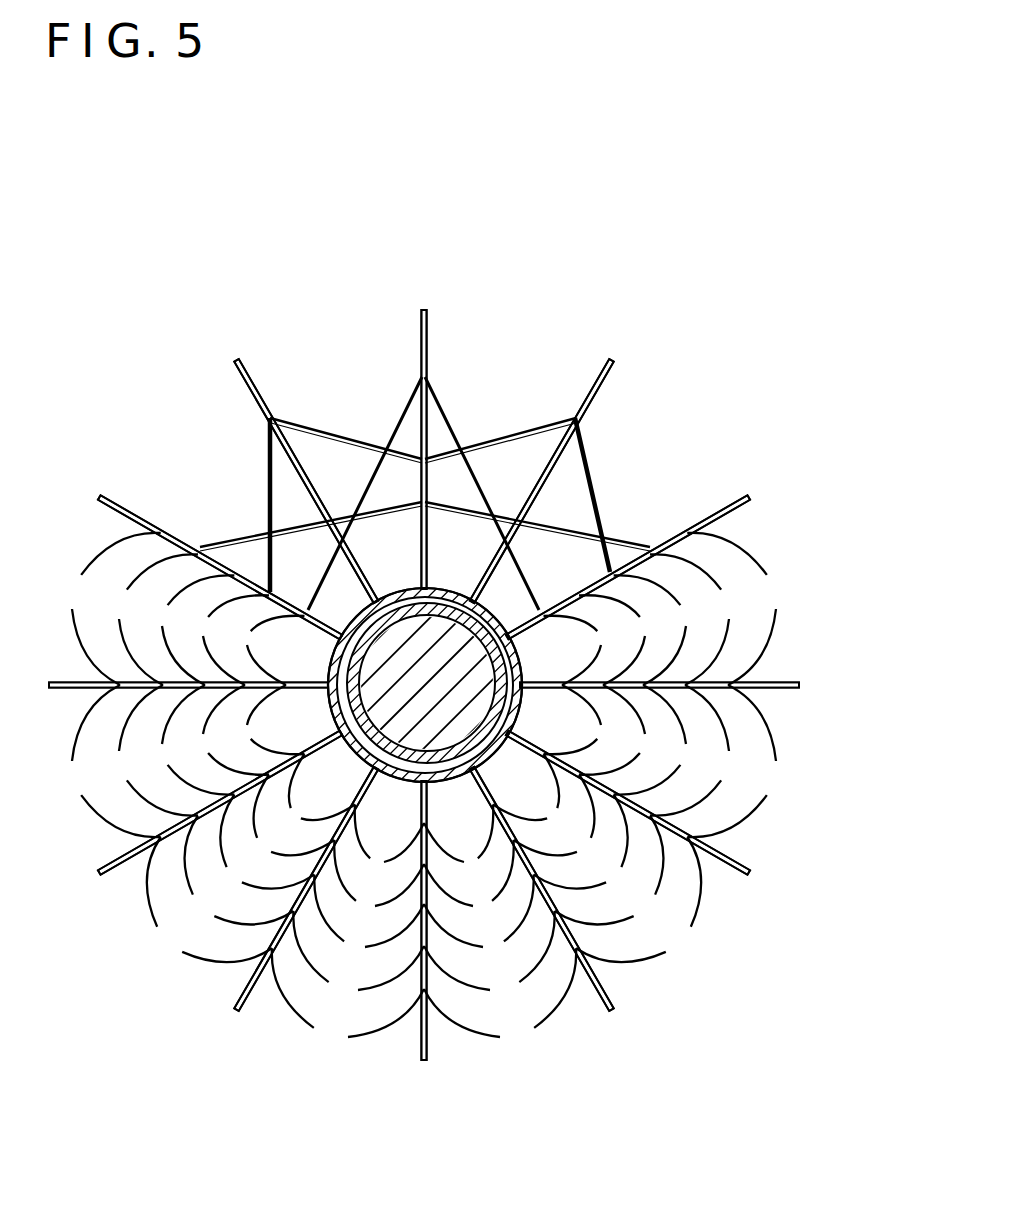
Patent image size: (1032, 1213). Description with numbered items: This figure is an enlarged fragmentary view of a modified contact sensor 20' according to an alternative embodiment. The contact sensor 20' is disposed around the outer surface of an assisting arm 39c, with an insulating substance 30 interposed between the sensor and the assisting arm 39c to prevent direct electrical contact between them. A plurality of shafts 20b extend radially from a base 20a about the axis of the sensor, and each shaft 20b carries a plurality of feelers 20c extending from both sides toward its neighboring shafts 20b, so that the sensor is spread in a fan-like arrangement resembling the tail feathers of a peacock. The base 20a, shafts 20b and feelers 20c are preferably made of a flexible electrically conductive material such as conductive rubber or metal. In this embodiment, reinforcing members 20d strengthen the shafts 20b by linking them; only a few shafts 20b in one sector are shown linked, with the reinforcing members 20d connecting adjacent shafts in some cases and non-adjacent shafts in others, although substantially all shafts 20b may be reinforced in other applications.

The contact sensor 20' is at (436, 669).
The base 20a is at (507, 643).
The shafts 20b is at (701, 514).
The feelers 20c is at (767, 732).
The reinforcing member 20d is at (572, 530).
The insulating substance 30 is at (428, 750).
The assisting arm 39c is at (430, 753).